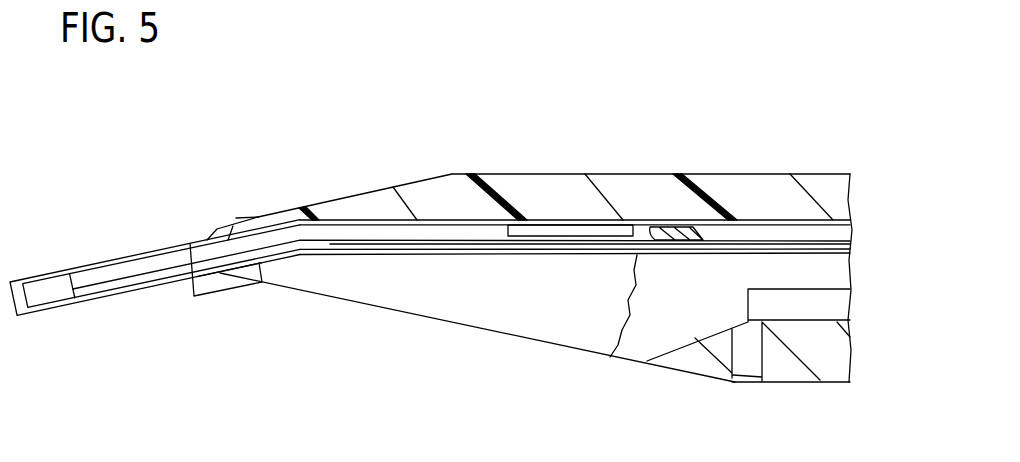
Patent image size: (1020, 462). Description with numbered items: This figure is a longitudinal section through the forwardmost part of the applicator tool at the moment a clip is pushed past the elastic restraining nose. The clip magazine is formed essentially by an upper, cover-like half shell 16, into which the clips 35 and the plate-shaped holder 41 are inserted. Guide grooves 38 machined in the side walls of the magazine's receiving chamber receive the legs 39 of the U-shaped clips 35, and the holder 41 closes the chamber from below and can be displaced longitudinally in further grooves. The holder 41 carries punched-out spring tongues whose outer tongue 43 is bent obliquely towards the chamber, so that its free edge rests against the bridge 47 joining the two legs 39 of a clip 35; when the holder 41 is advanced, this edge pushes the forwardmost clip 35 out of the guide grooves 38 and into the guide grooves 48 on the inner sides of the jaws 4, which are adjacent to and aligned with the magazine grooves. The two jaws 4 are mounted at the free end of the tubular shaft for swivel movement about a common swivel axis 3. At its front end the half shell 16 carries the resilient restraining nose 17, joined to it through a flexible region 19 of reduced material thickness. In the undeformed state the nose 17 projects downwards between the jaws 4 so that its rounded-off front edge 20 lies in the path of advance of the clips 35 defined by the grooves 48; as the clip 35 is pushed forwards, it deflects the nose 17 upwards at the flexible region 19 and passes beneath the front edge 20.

The swivel axis 3 is at (745, 375).
The jaws 4 is at (50, 273).
The half shell 16 is at (771, 166).
The restraining nose 17 is at (241, 210).
The flexible region 19 is at (321, 207).
The front edge 20 is at (210, 244).
The clip 35 is at (182, 282).
The guide grooves 38 is at (478, 227).
The legs 39 is at (133, 276).
The holder 41 is at (500, 244).
The spring tongue 43 is at (232, 272).
The bridge 47 is at (284, 216).
The guide grooves 48 is at (50, 293).